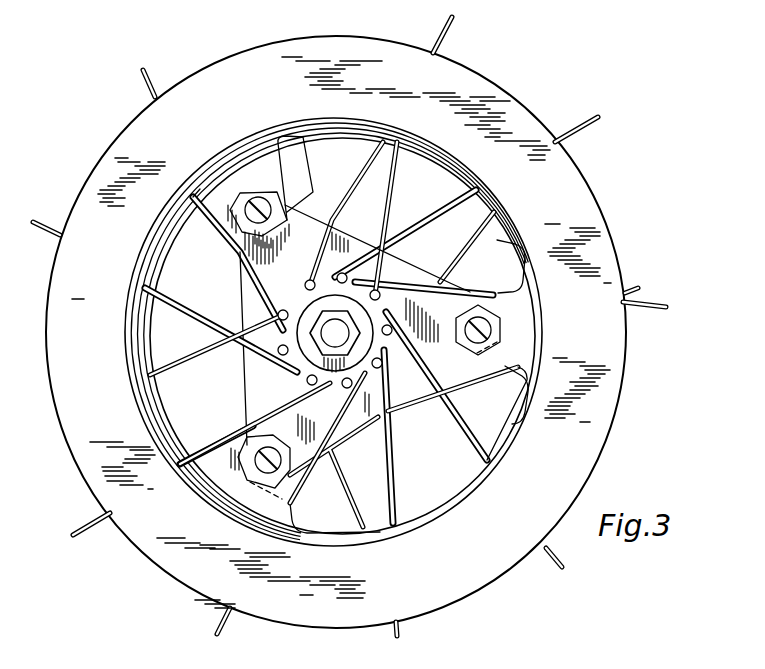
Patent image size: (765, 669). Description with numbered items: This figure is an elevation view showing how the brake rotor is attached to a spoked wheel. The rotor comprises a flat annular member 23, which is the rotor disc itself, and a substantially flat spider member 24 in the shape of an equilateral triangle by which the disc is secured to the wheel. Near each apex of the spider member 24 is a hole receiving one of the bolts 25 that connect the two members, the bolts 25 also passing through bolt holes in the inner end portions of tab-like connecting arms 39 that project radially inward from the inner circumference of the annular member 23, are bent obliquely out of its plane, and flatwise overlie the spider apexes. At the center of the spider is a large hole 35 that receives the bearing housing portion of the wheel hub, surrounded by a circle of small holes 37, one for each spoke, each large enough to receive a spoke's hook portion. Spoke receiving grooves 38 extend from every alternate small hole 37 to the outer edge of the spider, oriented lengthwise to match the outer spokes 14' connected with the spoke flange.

The flat annular member 23 is at (510, 98).
The outer spokes 14' is at (319, 322).
The bolts 25 is at (290, 196).
The spider member 24 is at (420, 268).
The connecting arms 39 is at (500, 288).
The small holes 37 is at (285, 310).
The spoke receiving grooves 38 is at (246, 328).
The large hole 35 is at (313, 365).